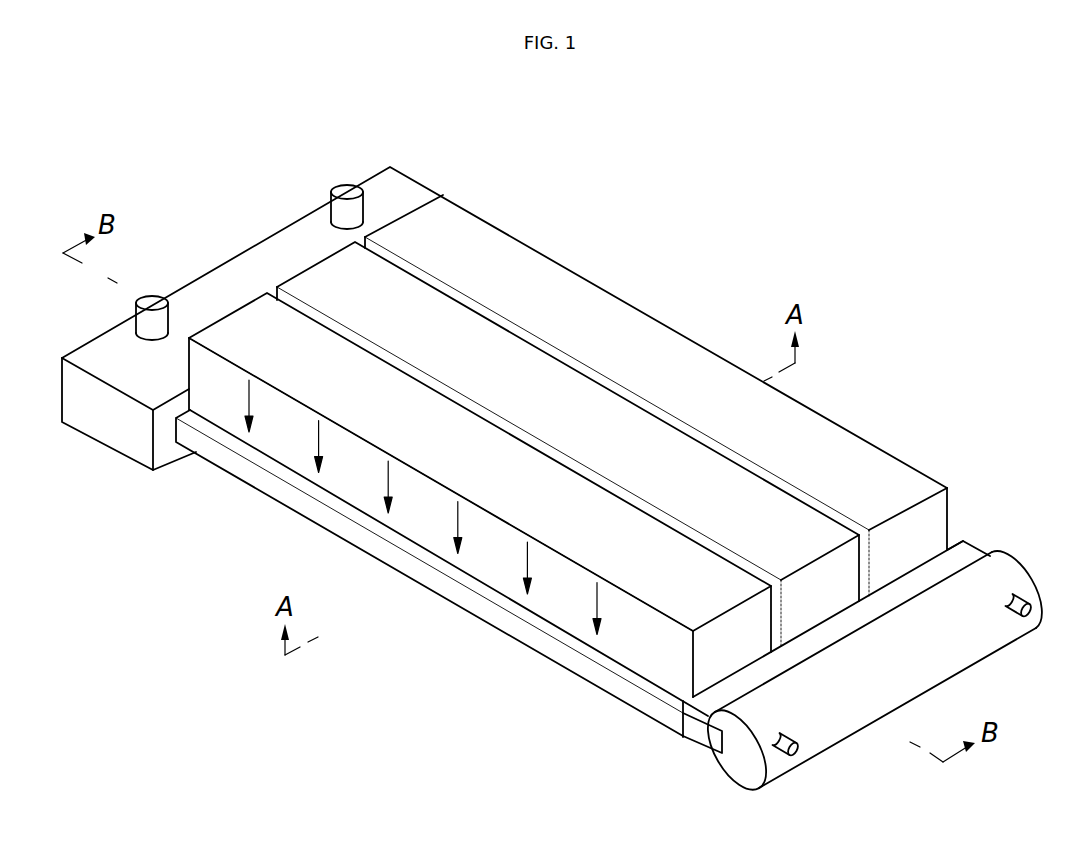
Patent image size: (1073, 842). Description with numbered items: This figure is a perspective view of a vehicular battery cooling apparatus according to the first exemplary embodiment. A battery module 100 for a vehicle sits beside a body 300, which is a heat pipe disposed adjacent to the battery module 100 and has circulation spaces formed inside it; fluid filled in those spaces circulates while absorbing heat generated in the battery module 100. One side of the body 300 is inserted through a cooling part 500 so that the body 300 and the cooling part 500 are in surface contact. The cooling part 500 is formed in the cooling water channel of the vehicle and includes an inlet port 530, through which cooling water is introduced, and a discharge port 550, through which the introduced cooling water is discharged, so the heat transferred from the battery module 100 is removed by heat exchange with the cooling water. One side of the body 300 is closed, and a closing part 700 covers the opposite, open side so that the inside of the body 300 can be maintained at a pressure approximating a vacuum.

The battery module 100 is at (523, 268).
The body 300 is at (577, 682).
The cooling part 500 is at (407, 197).
The inlet port 530 is at (157, 302).
The discharge port 550 is at (342, 190).
The closing part 700 is at (1003, 572).